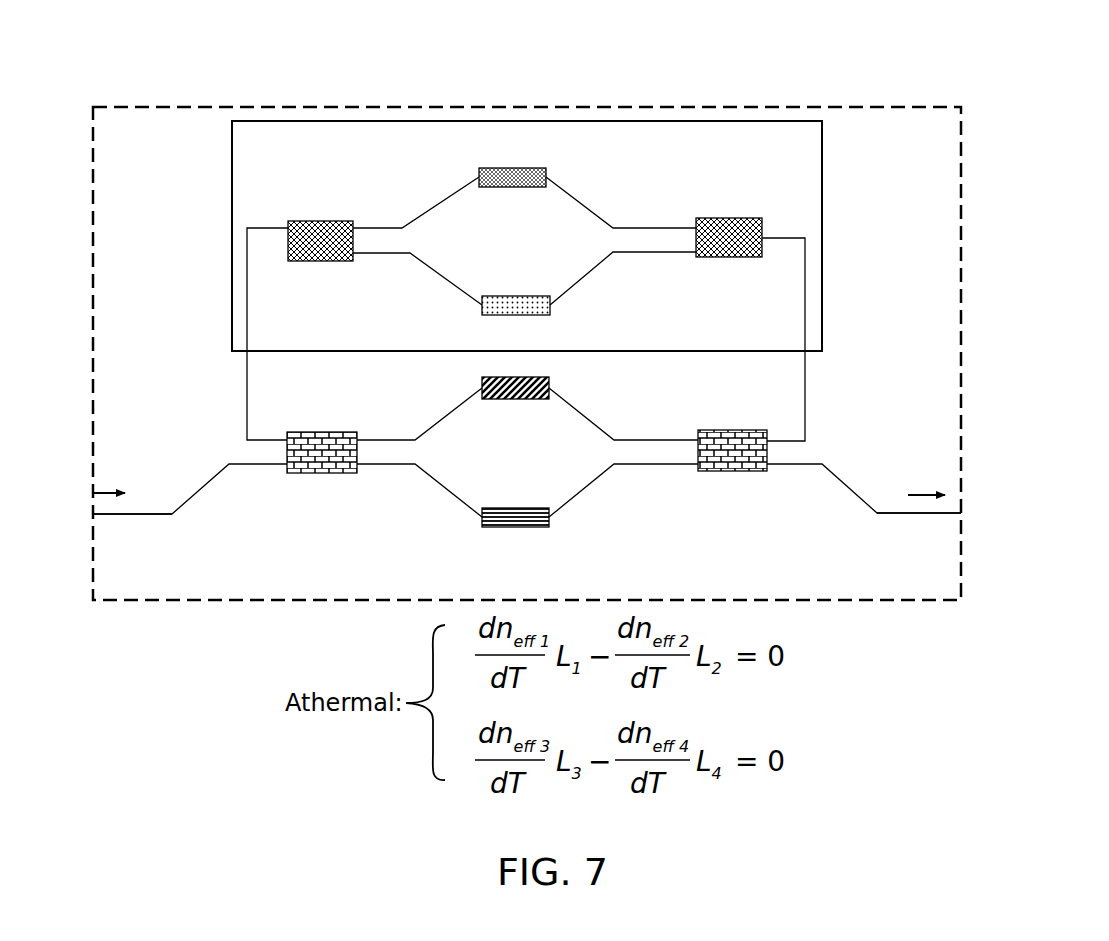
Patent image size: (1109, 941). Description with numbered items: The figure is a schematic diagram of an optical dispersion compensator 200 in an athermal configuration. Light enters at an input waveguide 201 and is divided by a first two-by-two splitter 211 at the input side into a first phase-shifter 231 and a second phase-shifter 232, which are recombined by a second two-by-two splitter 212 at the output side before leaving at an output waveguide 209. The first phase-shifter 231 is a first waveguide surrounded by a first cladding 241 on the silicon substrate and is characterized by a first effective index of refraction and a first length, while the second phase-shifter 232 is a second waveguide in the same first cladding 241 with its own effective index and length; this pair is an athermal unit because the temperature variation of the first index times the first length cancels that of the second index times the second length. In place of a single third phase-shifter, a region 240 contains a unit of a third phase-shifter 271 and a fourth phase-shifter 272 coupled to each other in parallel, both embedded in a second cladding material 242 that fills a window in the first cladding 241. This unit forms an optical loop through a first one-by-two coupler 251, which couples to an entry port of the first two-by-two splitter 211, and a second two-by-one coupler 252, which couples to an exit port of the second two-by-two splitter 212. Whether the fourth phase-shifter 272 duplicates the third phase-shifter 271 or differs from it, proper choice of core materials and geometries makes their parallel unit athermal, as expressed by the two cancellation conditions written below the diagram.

The optical dispersion compensator 200 is at (548, 60).
The second interferometer stage region 240 is at (232, 213).
The second cladding material 242 is at (689, 328).
The first cladding 241 is at (689, 408).
The first 1×2 coupler 251 is at (325, 262).
The second 2×1 coupler 252 is at (728, 258).
The first 2×2 splitter 211 is at (325, 473).
The second 2×2 splitter 212 is at (728, 472).
The third phase-shifter 271 is at (498, 188).
The fourth phase-shifter 272 is at (517, 316).
The first phase-shifter 231 is at (503, 400).
The second phase-shifter 232 is at (520, 528).
The input waveguide 201 is at (135, 515).
The output waveguide 209 is at (940, 514).